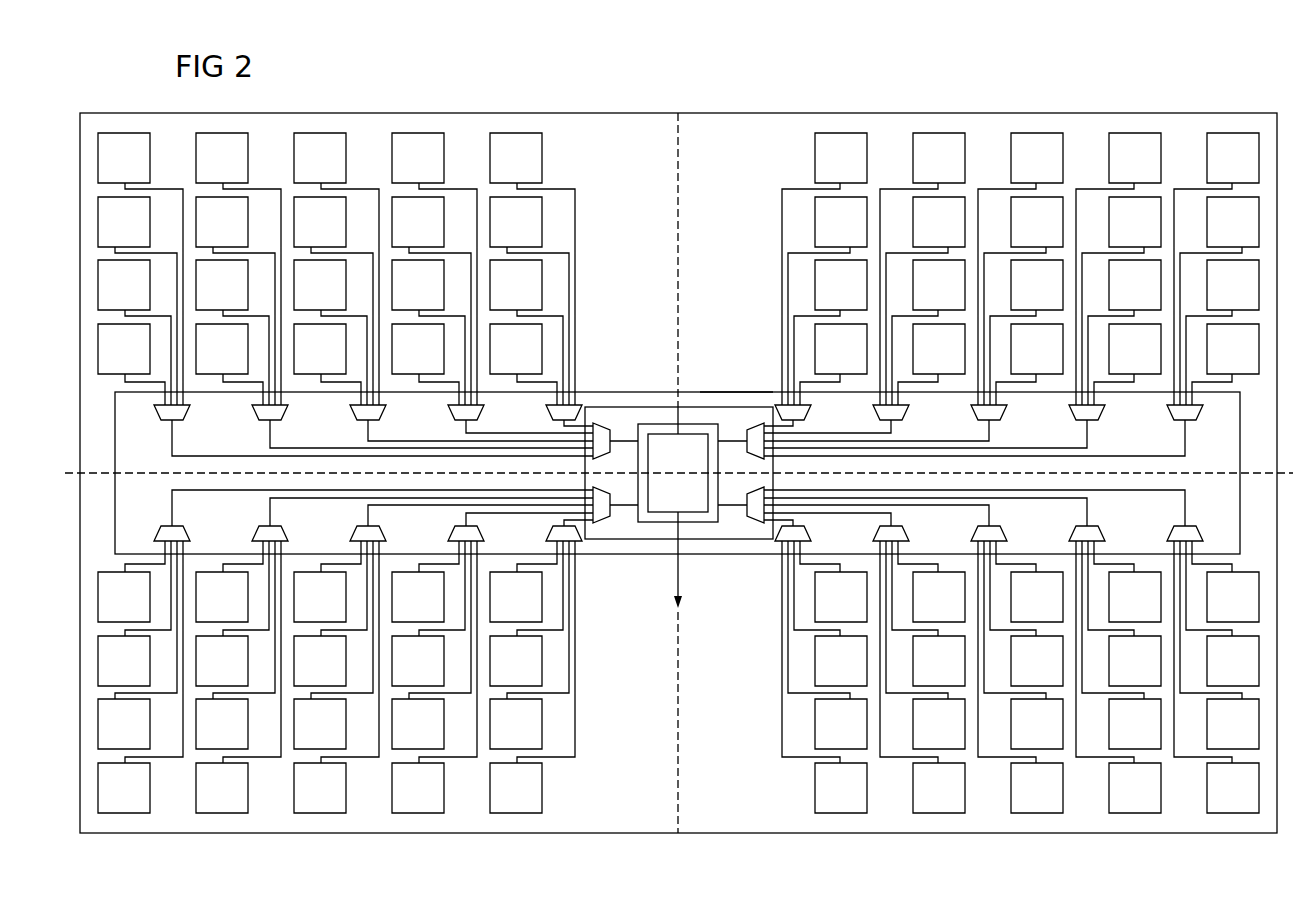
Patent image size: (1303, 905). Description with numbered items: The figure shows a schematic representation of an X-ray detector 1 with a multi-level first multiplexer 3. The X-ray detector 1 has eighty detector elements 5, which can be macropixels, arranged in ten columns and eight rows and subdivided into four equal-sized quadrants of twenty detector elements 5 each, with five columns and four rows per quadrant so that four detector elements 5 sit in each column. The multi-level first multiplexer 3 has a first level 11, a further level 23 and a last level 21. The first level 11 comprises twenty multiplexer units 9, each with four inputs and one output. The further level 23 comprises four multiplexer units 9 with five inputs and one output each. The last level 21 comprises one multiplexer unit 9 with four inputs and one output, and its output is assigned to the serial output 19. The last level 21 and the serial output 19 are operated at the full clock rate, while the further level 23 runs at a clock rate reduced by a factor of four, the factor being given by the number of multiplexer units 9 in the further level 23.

The X-ray detector 1 is at (1052, 96).
The multi-level first multiplexer 3 is at (1252, 449).
The detector elements 5 is at (1242, 801).
The multiplexer units 9 is at (687, 489).
The first level 11 is at (733, 392).
The serial output 19 is at (683, 593).
The last level 21 is at (694, 424).
The further level 23 is at (646, 415).